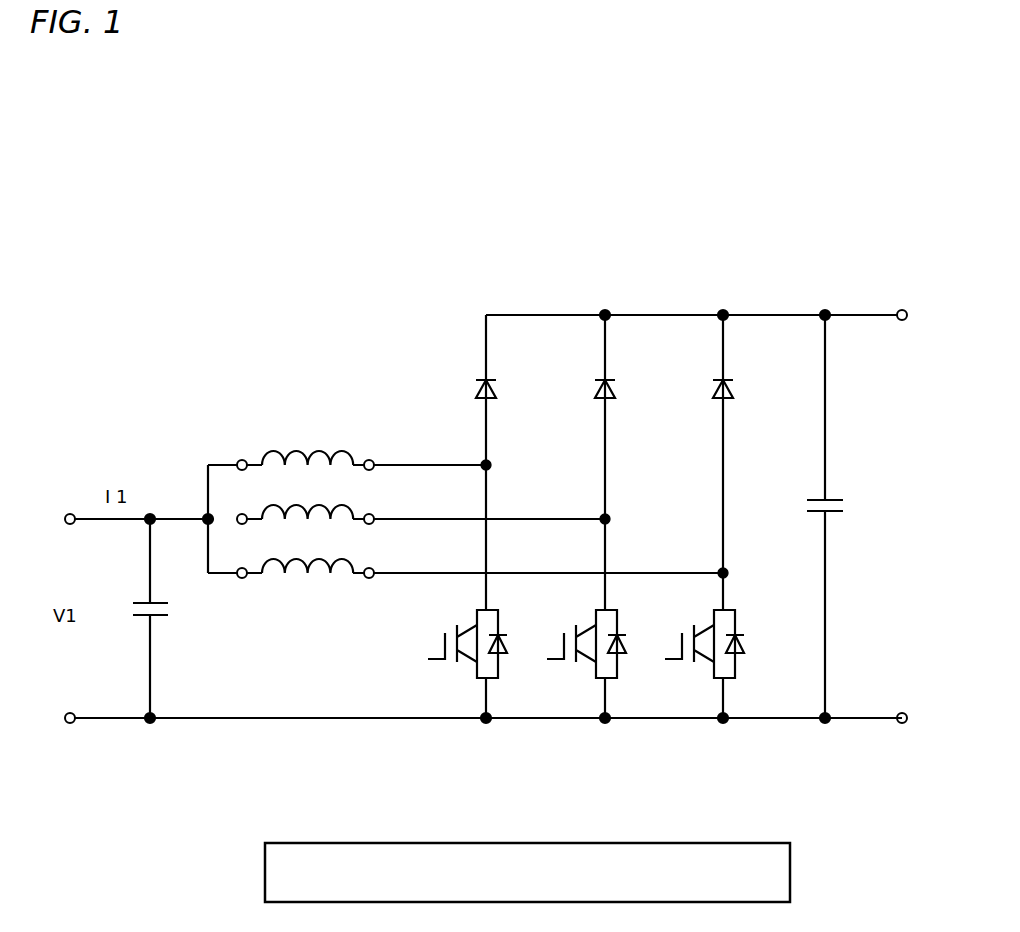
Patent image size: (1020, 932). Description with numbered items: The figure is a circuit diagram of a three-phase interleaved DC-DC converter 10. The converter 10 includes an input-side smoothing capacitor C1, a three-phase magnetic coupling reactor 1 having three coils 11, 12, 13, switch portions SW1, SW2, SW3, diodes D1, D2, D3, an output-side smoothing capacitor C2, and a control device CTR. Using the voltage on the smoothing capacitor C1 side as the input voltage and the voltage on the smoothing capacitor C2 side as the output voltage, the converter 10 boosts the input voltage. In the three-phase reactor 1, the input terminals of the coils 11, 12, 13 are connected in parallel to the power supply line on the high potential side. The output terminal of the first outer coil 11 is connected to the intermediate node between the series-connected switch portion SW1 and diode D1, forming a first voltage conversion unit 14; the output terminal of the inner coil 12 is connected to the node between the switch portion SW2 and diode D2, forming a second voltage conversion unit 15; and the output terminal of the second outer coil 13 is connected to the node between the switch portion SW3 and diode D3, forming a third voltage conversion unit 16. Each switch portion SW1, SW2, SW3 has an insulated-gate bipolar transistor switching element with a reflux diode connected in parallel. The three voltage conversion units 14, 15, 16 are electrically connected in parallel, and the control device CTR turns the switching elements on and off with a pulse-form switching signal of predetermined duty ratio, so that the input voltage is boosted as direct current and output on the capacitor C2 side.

The three-phase magnetic coupling reactor 1 is at (230, 406).
The three-phase interleaved DC-DC converter 10 is at (722, 149).
The coil 11 is at (322, 450).
The coil 12 is at (340, 504).
The coil 13 is at (325, 572).
The first voltage conversion unit 14 is at (460, 461).
The second voltage conversion unit 15 is at (567, 515).
The third voltage conversion unit 16 is at (583, 566).
The diode D1 is at (457, 333).
The diode D2 is at (577, 333).
The diode D3 is at (691, 337).
The switch portion SW1 is at (462, 704).
The switch portion SW2 is at (577, 704).
The switch portion SW3 is at (690, 703).
The smoothing capacitor C1 is at (163, 617).
The smoothing capacitor C2 is at (822, 498).
The control device CTR is at (527, 872).